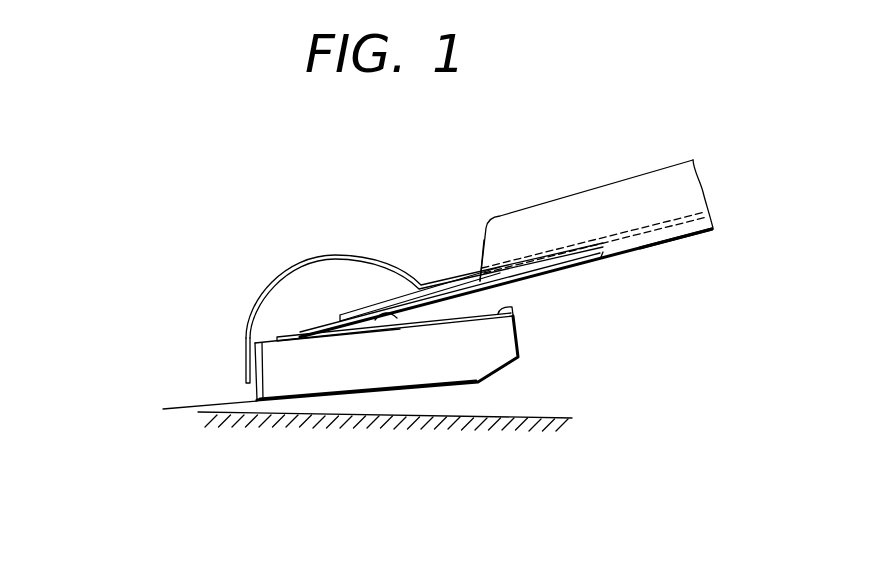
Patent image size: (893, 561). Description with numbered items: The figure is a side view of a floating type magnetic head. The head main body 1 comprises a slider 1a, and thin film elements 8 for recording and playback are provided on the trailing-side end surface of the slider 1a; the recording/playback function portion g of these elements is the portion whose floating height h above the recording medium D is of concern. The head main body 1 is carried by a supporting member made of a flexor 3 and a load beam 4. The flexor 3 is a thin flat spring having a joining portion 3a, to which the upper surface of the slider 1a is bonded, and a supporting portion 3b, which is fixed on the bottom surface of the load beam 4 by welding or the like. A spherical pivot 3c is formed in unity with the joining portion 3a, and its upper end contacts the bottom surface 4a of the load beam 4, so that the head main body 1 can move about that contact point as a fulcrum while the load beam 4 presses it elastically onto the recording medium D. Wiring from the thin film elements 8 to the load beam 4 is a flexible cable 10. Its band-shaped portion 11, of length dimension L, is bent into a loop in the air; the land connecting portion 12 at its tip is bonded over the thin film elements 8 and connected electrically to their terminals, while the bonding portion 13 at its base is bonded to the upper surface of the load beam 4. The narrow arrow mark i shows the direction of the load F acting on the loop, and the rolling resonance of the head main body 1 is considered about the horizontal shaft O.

The head main body 1 is at (530, 351).
The slider 1a is at (337, 381).
The flexor 3 is at (516, 292).
The joining portion 3a is at (502, 310).
The supporting portion 3b is at (598, 262).
The pivot 3c is at (395, 320).
The load beam 4 is at (622, 190).
The bottom surface of the load beam 4a is at (680, 237).
The thin film elements 8 is at (263, 372).
The flexible cable 10 is at (462, 262).
The band-shaped portion 11 is at (264, 298).
The land connecting portion 12 is at (247, 369).
The bonding portion 13 is at (564, 250).
The length dimension L is at (436, 242).
The load F is at (228, 347).
The direction of load i is at (183, 358).
The horizontal shaft O is at (140, 380).
The floating height h is at (177, 385).
The recording/playback function portion g is at (257, 406).
The recording medium D is at (523, 415).